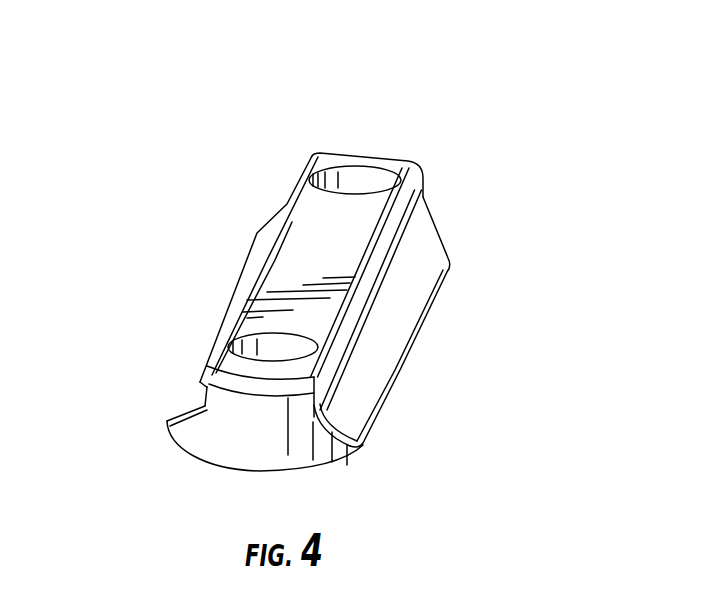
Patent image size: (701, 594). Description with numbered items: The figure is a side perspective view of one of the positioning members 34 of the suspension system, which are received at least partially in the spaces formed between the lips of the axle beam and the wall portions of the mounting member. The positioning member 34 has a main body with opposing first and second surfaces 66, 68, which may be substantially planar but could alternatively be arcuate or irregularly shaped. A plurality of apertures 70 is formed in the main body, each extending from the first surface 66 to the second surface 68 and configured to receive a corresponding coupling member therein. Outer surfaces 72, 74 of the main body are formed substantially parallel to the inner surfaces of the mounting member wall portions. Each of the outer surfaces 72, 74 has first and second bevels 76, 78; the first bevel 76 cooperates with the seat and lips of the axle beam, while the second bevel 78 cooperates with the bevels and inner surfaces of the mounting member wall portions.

The positioning member 34 is at (223, 246).
The first surface 66 is at (350, 235).
The second surface 68 is at (330, 467).
The apertures 70 is at (360, 177).
The outer surface 72 is at (200, 382).
The outer surface 74 is at (333, 364).
The first bevel 76 is at (181, 399).
The second bevel 78 is at (352, 403).